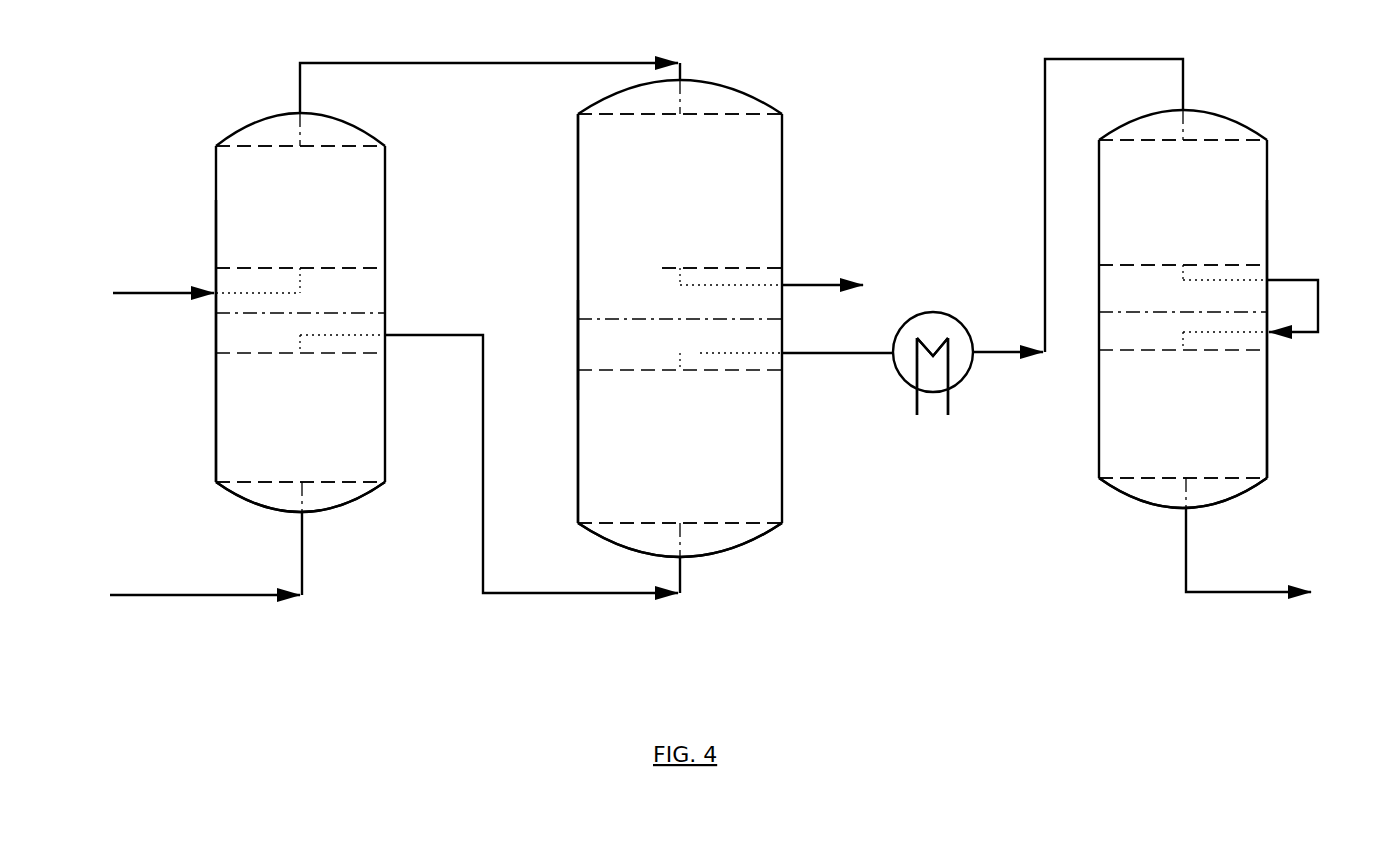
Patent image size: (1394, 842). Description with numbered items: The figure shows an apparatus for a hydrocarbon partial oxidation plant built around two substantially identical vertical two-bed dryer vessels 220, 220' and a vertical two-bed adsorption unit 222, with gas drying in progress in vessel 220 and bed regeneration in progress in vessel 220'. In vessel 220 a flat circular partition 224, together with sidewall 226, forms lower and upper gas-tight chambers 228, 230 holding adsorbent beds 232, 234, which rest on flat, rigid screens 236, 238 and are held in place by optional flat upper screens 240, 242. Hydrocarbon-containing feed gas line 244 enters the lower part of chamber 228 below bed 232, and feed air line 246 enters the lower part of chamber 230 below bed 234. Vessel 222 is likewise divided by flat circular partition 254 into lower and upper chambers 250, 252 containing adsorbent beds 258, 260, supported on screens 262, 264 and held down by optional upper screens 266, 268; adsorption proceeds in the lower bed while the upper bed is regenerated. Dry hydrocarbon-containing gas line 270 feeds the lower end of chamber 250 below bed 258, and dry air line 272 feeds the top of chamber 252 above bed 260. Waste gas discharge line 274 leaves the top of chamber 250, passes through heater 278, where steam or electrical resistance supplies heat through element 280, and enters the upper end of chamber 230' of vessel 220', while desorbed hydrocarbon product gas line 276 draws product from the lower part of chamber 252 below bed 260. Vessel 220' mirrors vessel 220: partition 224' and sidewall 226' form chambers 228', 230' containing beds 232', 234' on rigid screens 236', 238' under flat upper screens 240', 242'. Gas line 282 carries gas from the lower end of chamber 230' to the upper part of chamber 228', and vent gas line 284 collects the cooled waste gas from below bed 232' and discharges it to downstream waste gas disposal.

The two bed dryer vessel 220 is at (244, 312).
The two-bed adsorption unit 222 is at (807, 123).
The flat circular partition 224 is at (344, 292).
The sidewall 226 is at (174, 341).
The lower gas-tight chamber 228 is at (251, 356).
The upper gas-tight chamber 230 is at (206, 258).
The adsorbent bed 232 is at (300, 451).
The adsorbent bed 234 is at (300, 229).
The flat, rigid screen 236 is at (323, 517).
The flat, rigid screen 238 is at (338, 243).
The flat upper screen 240 is at (310, 369).
The flat upper screen 242 is at (282, 109).
The hydrocarbon-containing feed gas line 244 is at (217, 595).
The feed air line 246 is at (130, 313).
The lower gas-tight chamber 250 is at (593, 349).
The upper gas-tight chamber 252 is at (605, 295).
The flat circular partition 254 is at (602, 319).
The adsorbent bed 258 is at (680, 482).
The adsorbent bed 260 is at (722, 229).
The flat, rigid screen 262 is at (718, 523).
The flat, rigid screen 264 is at (742, 268).
The flat upper screen 266 is at (612, 405).
The flat upper screen 268 is at (622, 153).
The dry hydrocarbon-containing gas line 270 is at (487, 552).
The dry air line 272 is at (402, 63).
The waste gas discharge line 274 is at (805, 353).
The desorbed hydrocarbon product gas line 276 is at (797, 285).
The heater 278 is at (942, 312).
The heating element 280 is at (917, 410).
The gas line 282 is at (1328, 306).
The vent gas line 284 is at (1186, 555).
The two bed dryer vessel 220' is at (1238, 309).
The flat circular partition 224' is at (1138, 364).
The vessel sidewall 226' is at (1316, 339).
The lower gas-tight chamber 228' is at (1231, 371).
The upper gas-tight chamber 230' is at (1288, 271).
The adsorbent bed 232' is at (1183, 446).
The adsorbent bed 234' is at (1183, 219).
The flat, rigid screen 236' is at (1222, 506).
The flat, rigid screen 238' is at (1183, 243).
The flat upper screen 240' is at (1207, 361).
The flat upper screen 242' is at (1203, 105).